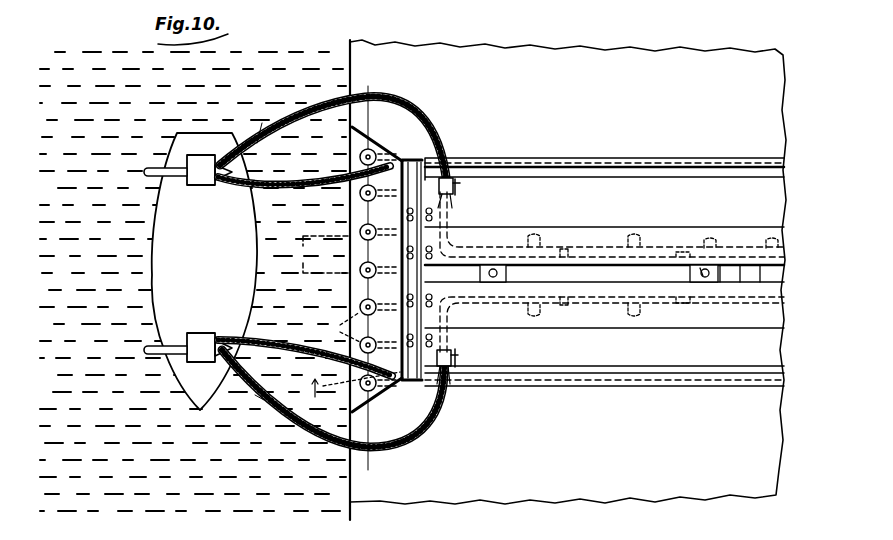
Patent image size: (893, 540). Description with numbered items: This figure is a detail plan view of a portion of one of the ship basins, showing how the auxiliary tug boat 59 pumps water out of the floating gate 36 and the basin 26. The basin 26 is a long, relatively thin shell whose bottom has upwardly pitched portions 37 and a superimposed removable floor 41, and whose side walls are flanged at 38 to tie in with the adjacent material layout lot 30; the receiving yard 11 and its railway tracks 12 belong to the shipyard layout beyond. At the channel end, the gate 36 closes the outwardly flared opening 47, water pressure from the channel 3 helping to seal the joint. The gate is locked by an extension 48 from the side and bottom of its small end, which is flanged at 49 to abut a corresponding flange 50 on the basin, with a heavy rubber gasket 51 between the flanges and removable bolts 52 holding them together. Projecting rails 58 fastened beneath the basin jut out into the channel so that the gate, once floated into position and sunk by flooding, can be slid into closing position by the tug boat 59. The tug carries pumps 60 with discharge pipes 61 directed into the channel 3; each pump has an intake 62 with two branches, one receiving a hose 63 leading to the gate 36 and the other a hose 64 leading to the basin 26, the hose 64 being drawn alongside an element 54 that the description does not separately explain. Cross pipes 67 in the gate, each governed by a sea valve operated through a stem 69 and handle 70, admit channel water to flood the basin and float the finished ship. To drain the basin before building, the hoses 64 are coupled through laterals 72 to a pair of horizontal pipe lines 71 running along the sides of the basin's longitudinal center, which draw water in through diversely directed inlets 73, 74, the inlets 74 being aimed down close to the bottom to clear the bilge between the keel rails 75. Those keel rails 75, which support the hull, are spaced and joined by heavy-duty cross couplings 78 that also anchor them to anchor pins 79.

The water channel 3 is at (193, 281).
The receiving yard 11 is at (492, 357).
The railway tracks 12 is at (380, 85).
The basin 26 is at (592, 158).
The material layout lot 30 is at (625, 50).
The gate 36 is at (447, 188).
The upwardly pitched portions 37 is at (662, 200).
The flange 38 is at (633, 162).
The floor 41 is at (676, 245).
The opening 47 is at (400, 150).
The extension 48 is at (408, 165).
The flange 49 is at (419, 165).
The flange 50 is at (447, 178).
The gasket 51 is at (442, 392).
The bolts 52 is at (440, 382).
The cable 54 is at (288, 116).
The projecting rails 58 is at (302, 270).
The tug boat 59 is at (204, 271).
The pumps 60 is at (190, 182).
The discharge pipes 61 is at (158, 167).
The intake 62 is at (226, 174).
The hose 63 is at (288, 187).
The hose 64 is at (257, 143).
The cross pipes 67 is at (336, 327).
The stem 69 is at (360, 227).
The handle 70 is at (360, 243).
The horizontal pipe lines 71 is at (566, 247).
The laterals 72 is at (450, 220).
The inlets 73 is at (634, 236).
The inlets 74 is at (684, 256).
The keel rails 75 is at (772, 265).
The cross couplings 78 is at (695, 284).
The anchor pins 79 is at (496, 266).